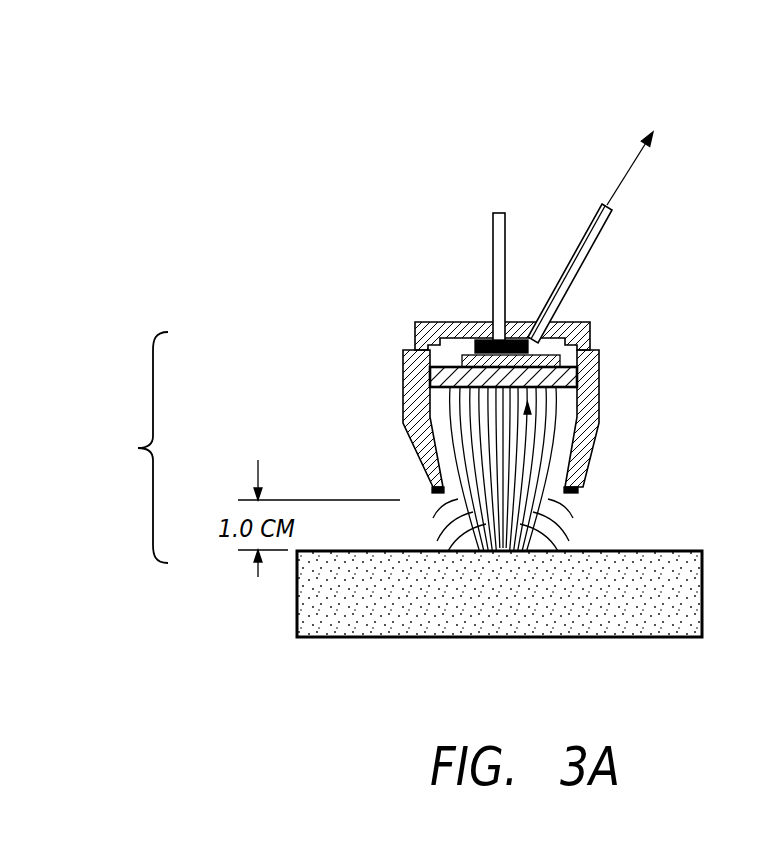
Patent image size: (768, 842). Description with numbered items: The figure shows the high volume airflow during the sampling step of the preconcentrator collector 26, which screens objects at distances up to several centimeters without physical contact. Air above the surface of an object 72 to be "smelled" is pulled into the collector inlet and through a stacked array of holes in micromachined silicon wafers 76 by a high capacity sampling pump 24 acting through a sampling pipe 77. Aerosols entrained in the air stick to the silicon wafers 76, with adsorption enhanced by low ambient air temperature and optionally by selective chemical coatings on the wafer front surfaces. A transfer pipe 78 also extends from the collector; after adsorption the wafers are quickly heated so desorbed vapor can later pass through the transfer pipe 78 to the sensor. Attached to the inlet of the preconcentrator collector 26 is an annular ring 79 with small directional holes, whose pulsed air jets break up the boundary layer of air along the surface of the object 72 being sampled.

The sampling pump 24 is at (667, 138).
The preconcentrator collector 26 is at (582, 322).
The object 72 is at (677, 551).
The silicon wafers 76 is at (440, 387).
The sampling pipe 77 is at (603, 235).
The transfer pipe 78 is at (505, 224).
The annular ring 79 is at (572, 494).